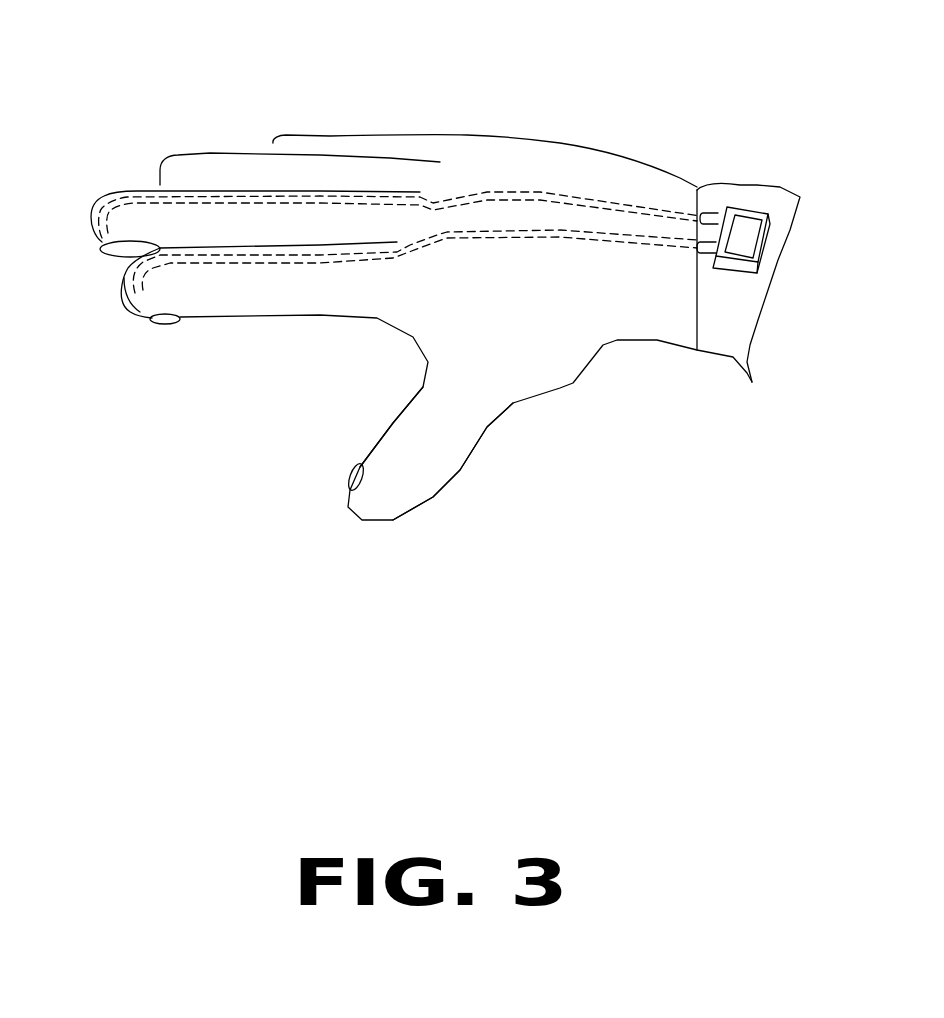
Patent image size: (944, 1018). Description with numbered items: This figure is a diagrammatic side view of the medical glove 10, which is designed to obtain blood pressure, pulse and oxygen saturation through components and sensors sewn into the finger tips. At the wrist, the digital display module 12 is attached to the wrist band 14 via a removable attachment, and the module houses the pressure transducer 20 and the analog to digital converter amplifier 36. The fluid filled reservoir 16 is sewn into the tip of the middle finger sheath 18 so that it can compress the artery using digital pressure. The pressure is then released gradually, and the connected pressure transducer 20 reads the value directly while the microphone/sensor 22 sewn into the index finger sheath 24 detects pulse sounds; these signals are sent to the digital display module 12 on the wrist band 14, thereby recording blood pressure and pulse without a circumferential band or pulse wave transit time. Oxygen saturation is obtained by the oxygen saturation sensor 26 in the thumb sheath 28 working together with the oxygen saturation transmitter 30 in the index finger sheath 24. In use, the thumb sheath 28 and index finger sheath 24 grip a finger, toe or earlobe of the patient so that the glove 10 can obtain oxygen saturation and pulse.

The medical glove 10 is at (590, 142).
The digital display module 12 is at (757, 205).
The wrist band 14 is at (737, 305).
The fluid filled reservoir 16 is at (102, 249).
The middle finger sheath 18 is at (237, 228).
The pressure transducer 20 is at (710, 215).
The microphone/sensor 22 is at (170, 325).
The index finger sheath 24 is at (348, 302).
The oxygen saturation sensor 26 is at (350, 473).
The thumb sheath 28 is at (433, 462).
The oxygen saturation transmitter 30 is at (123, 302).
The analog to digital converter amplifier 36 is at (700, 255).